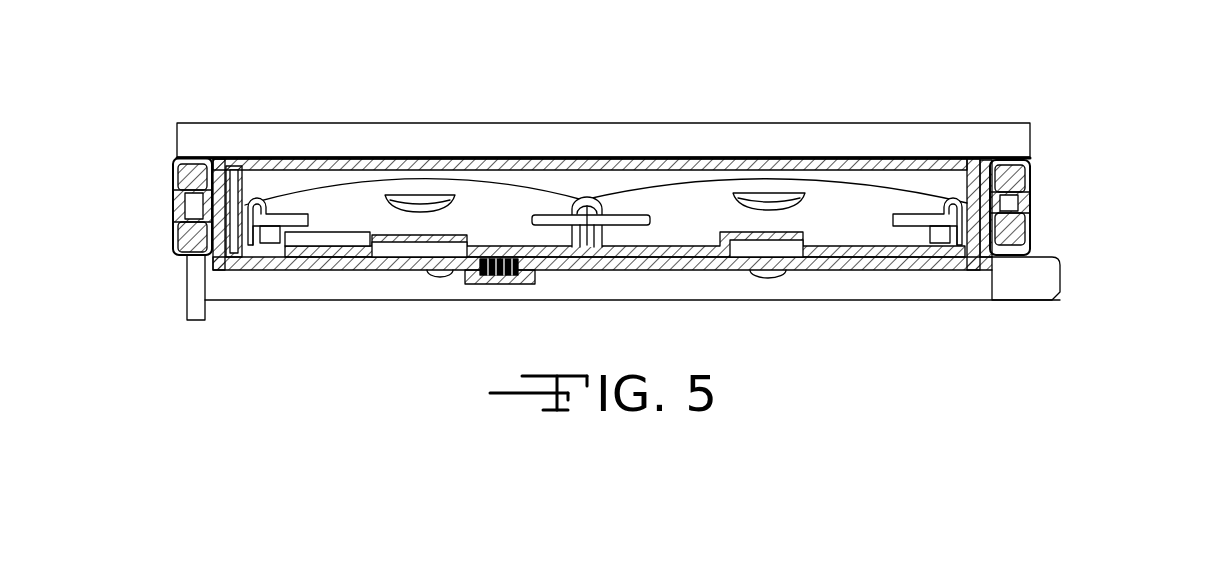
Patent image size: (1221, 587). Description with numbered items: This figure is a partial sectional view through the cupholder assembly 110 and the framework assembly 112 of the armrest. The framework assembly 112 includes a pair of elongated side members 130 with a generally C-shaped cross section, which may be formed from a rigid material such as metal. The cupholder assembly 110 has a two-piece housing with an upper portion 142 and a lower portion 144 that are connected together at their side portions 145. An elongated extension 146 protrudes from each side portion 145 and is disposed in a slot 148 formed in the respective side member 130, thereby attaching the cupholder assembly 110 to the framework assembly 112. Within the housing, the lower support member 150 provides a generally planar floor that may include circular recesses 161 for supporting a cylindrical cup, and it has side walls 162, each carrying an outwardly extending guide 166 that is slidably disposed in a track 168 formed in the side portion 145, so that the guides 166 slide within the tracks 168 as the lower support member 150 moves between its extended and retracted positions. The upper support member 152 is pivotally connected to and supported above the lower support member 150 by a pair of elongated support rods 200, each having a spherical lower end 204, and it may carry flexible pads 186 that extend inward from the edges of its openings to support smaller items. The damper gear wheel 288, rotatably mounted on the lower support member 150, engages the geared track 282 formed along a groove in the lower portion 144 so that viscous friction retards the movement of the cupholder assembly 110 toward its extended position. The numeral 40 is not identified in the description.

The display assembly 40 is at (850, 154).
The cupholder assembly 110 is at (396, 154).
The framework assembly 112 is at (1036, 118).
The side members 130 is at (173, 177).
The upper portion 142 is at (627, 158).
The lower portion 144 is at (917, 265).
The side portions 145 is at (217, 157).
The elongated extension 146 is at (173, 223).
The slots 148 is at (183, 247).
The lower support member 150 is at (343, 263).
The upper support member 152 is at (272, 183).
The circular recesses 161 is at (503, 233).
The side walls 162 is at (235, 162).
The guide 166 is at (175, 158).
The tracks 168 is at (173, 202).
The flexible pads 186 is at (305, 212).
The support rods 200 is at (420, 262).
The spherical lower end 204 is at (443, 263).
The geared track 282 is at (503, 276).
The gear wheel 288 is at (487, 275).